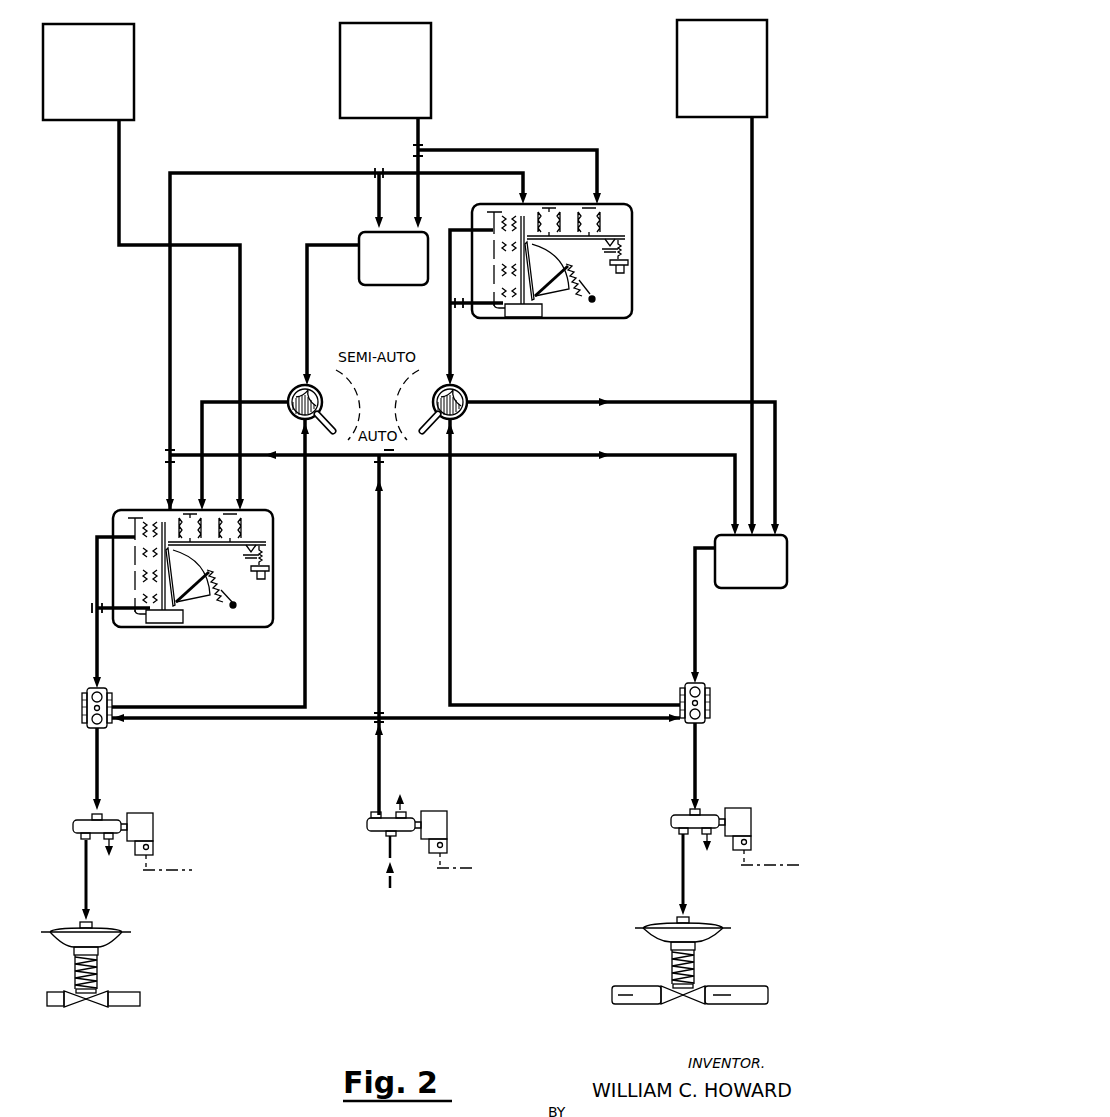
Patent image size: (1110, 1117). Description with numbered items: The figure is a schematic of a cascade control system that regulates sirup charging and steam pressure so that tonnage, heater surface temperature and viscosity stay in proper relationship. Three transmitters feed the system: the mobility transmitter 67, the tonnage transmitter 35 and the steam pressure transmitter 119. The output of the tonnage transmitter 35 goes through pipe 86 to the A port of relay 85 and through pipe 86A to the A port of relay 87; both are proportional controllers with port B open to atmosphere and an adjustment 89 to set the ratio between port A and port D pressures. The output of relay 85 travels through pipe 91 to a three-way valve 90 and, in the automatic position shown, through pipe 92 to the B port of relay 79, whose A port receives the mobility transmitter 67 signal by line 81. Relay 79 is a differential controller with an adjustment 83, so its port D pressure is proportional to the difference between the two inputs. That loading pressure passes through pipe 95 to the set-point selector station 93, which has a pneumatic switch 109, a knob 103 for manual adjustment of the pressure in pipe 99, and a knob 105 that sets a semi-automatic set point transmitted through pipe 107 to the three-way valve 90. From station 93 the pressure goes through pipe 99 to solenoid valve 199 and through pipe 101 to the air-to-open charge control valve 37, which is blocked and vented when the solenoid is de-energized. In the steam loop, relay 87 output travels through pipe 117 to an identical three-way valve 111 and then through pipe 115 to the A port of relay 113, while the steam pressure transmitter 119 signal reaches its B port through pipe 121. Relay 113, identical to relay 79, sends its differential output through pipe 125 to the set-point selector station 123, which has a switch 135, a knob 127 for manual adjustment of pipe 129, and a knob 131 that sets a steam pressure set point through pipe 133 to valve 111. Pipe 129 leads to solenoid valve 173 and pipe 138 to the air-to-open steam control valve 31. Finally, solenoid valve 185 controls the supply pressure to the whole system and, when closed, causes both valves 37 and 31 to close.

The mobility transmitter 67 is at (134, 66).
The tonnage transmitter 35 is at (431, 63).
The steam pressure transmitter 119 is at (677, 72).
The mobility signal line 81 is at (240, 303).
The pipe 86 is at (422, 132).
The pipe 86A is at (512, 146).
The pipe 121 is at (752, 248).
The relay 85 is at (380, 285).
The pipe 91 is at (307, 303).
The relay 87 is at (632, 215).
The adjustment 89 is at (586, 292).
The pipe 117 is at (450, 348).
The three-way valve 90 is at (292, 390).
The three-way valve 111 is at (467, 397).
The pipe 92 is at (228, 400).
The pipe 107 is at (305, 618).
The pipe 115 is at (640, 402).
The pipe 133 is at (450, 590).
The solenoid valve 185 is at (445, 812).
The relay 79 is at (222, 628).
The adjustment 83 is at (226, 600).
The pipe 95 is at (97, 648).
The set-point selector station 93 is at (98, 701).
The pneumatic switch 109 is at (92, 693).
The knob 105 is at (94, 707).
The knob 103 is at (92, 722).
The pipe 99 is at (97, 767).
The solenoid valve 199 is at (140, 812).
The pipe 101 is at (86, 894).
The charge control valve 37 is at (100, 966).
The relay 113 is at (748, 588).
The pipe 125 is at (695, 620).
The set-point selector station 123 is at (694, 699).
The switch 135 is at (700, 690).
The knob 131 is at (700, 703).
The knob 127 is at (700, 717).
The pipe 129 is at (695, 765).
The solenoid valve 173 is at (742, 808).
The pipe 138 is at (683, 876).
The steam control valve 31 is at (698, 962).